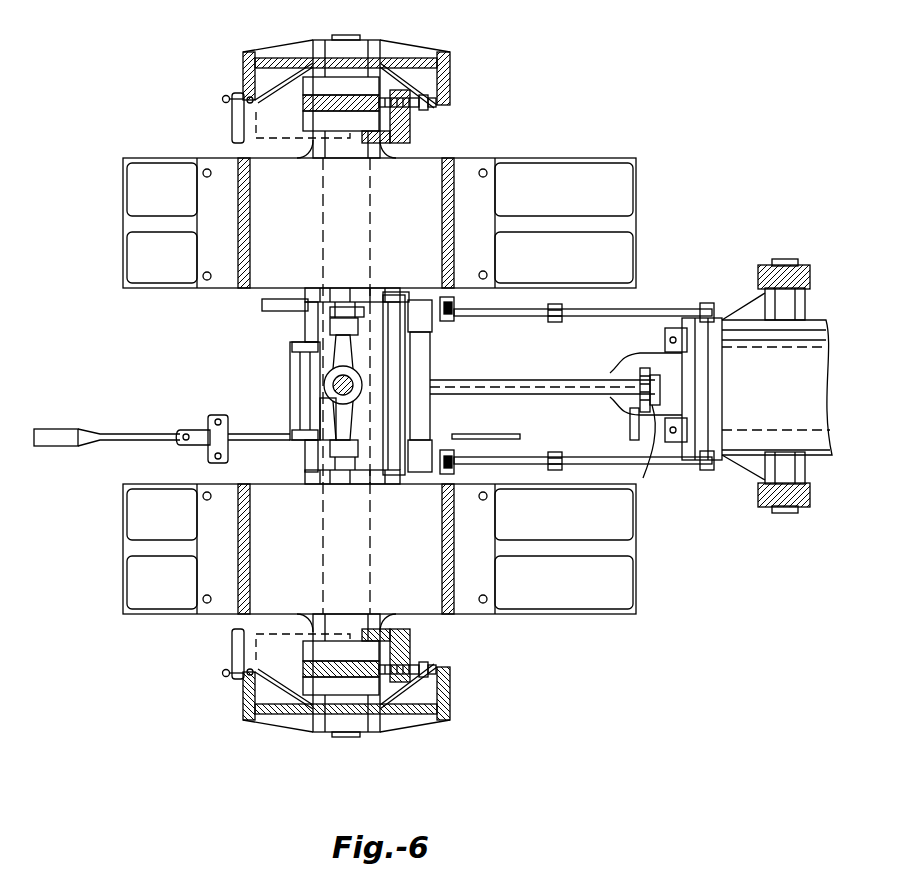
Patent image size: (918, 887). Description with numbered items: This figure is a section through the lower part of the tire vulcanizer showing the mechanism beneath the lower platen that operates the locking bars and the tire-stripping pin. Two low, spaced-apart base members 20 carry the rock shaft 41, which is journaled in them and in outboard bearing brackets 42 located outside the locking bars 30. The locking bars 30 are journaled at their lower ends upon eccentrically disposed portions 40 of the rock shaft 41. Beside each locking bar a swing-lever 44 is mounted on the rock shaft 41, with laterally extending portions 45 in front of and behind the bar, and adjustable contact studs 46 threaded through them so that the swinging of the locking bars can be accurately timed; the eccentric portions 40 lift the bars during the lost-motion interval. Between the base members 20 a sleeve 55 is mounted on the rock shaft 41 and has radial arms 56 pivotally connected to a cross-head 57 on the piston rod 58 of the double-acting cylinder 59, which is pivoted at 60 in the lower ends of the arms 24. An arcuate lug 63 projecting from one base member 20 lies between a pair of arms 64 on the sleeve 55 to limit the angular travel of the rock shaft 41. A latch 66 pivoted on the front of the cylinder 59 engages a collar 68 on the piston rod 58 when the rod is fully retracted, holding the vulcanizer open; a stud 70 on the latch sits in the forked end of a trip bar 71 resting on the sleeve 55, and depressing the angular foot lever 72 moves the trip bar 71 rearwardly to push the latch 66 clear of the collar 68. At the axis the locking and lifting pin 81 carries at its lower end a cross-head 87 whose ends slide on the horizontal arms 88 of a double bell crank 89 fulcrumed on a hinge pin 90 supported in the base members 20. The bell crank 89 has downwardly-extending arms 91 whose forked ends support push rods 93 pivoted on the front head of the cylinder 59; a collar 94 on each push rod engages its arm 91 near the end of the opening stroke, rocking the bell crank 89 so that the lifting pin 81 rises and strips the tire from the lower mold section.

The base members 20 is at (556, 176).
The arms 24 is at (762, 276).
The locking bars 30 is at (304, 101).
The eccentrically disposed portions 40 is at (345, 66).
The rock shaft 41 is at (349, 36).
The outboard bearing brackets 42 is at (410, 64).
The swing-levers 44 is at (405, 138).
The laterally extending portions 45 is at (240, 92).
The adjustable contact studs 46 is at (226, 103).
The sleeve 55 is at (306, 458).
The radial arms 56 is at (296, 347).
The cross-head 57 is at (297, 390).
The piston rod 58 is at (569, 390).
The double-acting fluid pressure operated cylinder 59 is at (757, 389).
The pivotal mounting 60 is at (788, 262).
The arcuate lug 63 is at (300, 314).
The arms 64 is at (262, 305).
The latch 66 is at (648, 409).
The collar 68 is at (431, 411).
The stud 70 is at (630, 430).
The trip bar 71 is at (496, 434).
The angular foot lever 72 is at (124, 430).
The locking and lifting pin 81 is at (334, 385).
The cross-head 87 is at (320, 412).
The horizontal arms 88 is at (366, 300).
The double bell crank 89 is at (403, 364).
The hinge pin 90 is at (432, 343).
The downwardly-extending arms 91 is at (452, 297).
The push rods 93 is at (660, 310).
The collar 94 is at (554, 322).